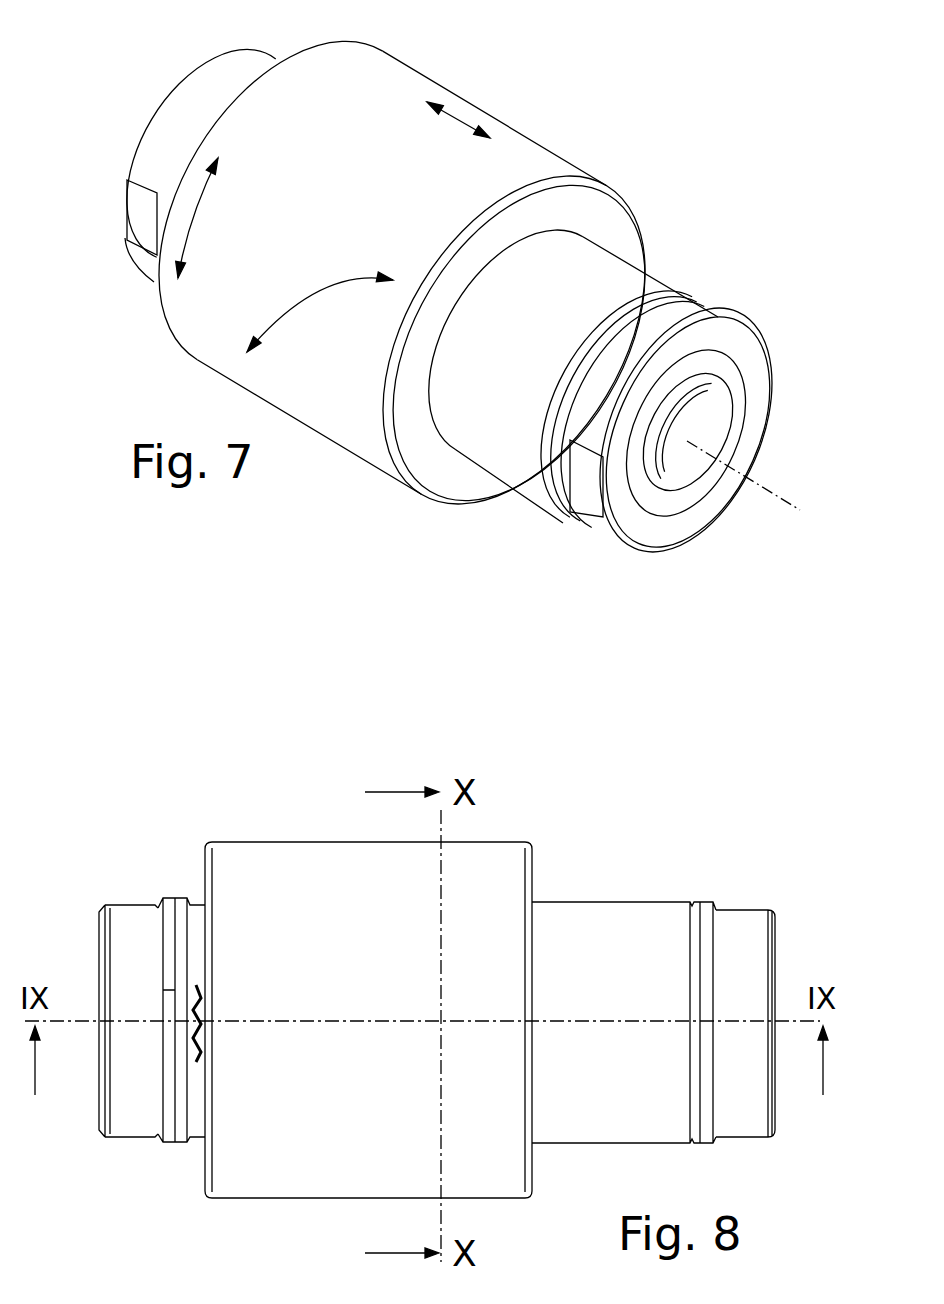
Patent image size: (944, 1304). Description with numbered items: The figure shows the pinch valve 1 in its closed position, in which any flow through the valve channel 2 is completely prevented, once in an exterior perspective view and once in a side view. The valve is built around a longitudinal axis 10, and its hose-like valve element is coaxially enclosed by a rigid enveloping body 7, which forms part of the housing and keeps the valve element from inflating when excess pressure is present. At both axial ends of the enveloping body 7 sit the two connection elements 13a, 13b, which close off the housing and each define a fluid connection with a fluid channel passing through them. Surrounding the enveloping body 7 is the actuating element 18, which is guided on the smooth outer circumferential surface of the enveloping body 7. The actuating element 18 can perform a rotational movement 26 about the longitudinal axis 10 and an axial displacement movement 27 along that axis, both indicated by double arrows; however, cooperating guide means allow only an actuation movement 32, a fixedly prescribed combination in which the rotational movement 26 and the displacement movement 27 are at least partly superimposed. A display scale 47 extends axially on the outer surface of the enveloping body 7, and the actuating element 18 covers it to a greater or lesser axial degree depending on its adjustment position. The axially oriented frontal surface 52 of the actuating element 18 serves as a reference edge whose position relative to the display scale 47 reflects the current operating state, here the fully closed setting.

In FIG. 7, the pinch valve 1 is at (688, 140).
In FIG. 8, the pinch valve 1 is at (583, 840).
In FIG. 7, the valve channel 2 is at (700, 421).
In FIG. 7, the enveloping body 7 is at (525, 458).
In FIG. 8, the enveloping body 7 is at (640, 930).
In FIG. 7, the longitudinal axis 10 is at (762, 480).
In FIG. 8, the longitudinal axis 10 is at (85, 1010).
In FIG. 8, the connection element 13a is at (132, 917).
In FIG. 8, the connection element 13b is at (747, 923).
In FIG. 7, the actuating element 18 is at (350, 433).
In FIG. 8, the actuating element 18 is at (310, 863).
In FIG. 7, the rotational movement 26 is at (197, 213).
In FIG. 7, the axial displacement movement 27 is at (463, 120).
In FIG. 7, the actuation movement 32 is at (317, 297).
In FIG. 8, the display scale 47 is at (200, 980).
In FIG. 8, the frontal surface 52 is at (205, 870).